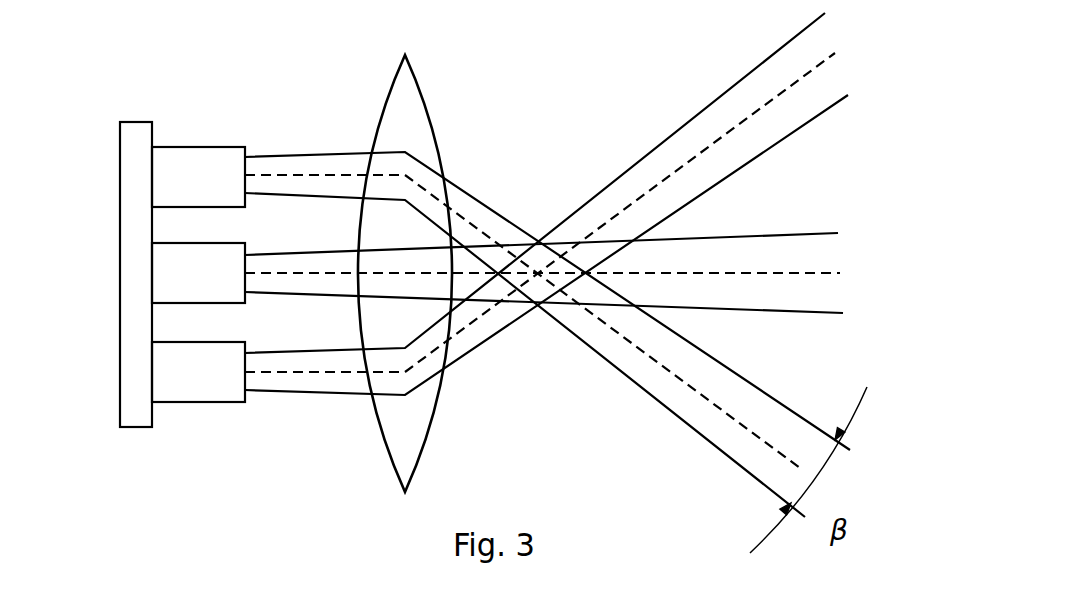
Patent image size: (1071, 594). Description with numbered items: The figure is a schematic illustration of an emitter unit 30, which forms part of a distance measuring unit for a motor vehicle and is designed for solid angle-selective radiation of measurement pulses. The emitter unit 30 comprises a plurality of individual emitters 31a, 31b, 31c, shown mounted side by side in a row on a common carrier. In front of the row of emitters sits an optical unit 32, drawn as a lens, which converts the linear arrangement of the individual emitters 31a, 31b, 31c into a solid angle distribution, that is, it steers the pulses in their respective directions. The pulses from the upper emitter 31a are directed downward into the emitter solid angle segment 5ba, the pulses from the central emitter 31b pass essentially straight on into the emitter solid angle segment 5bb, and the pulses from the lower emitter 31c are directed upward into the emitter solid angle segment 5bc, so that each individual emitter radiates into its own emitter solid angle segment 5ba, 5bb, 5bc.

The emitter unit 30 is at (108, 94).
The individual emitter 31a is at (197, 182).
The individual emitter 31b is at (198, 280).
The individual emitter 31c is at (193, 377).
The optical unit 32 is at (412, 130).
The emitter solid angle segment 5ba is at (700, 412).
The emitter solid angle segment 5bb is at (780, 260).
The emitter solid angle segment 5bc is at (713, 130).